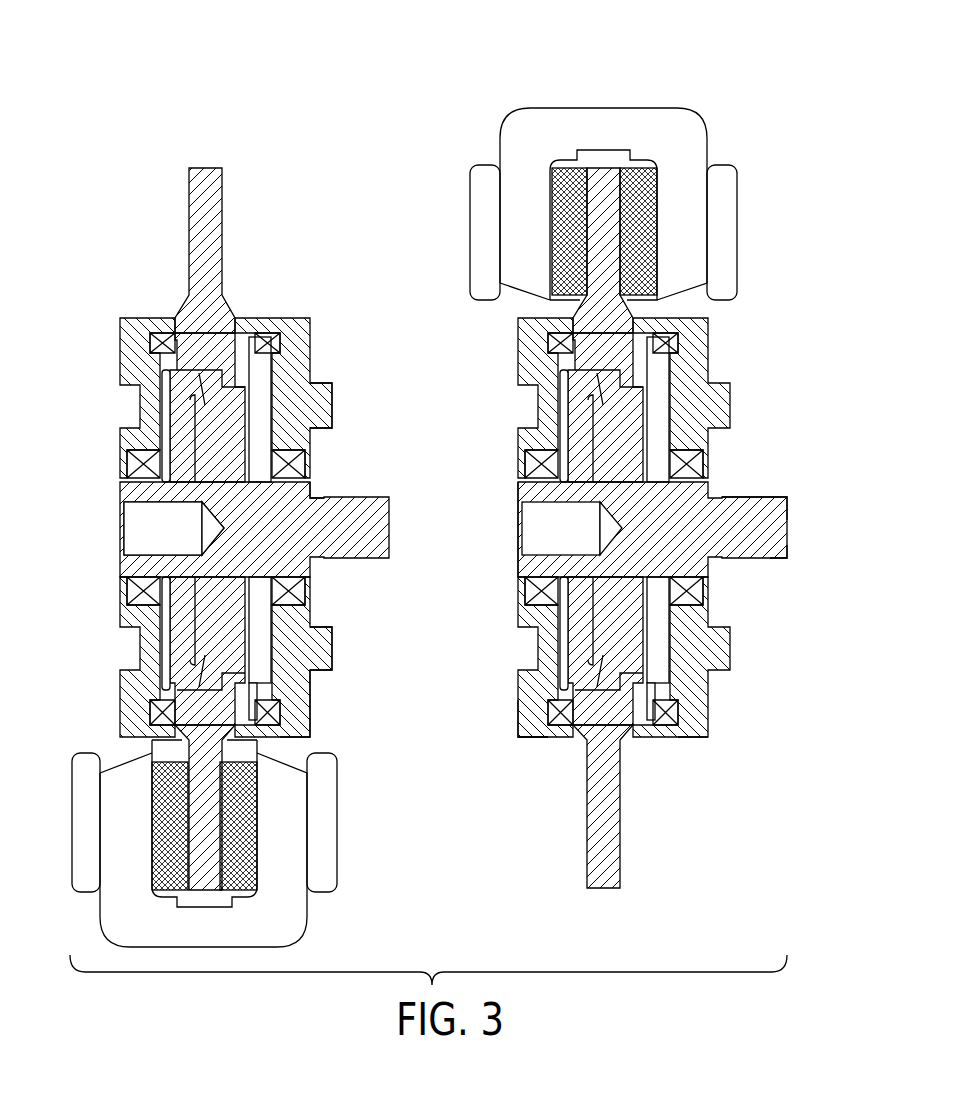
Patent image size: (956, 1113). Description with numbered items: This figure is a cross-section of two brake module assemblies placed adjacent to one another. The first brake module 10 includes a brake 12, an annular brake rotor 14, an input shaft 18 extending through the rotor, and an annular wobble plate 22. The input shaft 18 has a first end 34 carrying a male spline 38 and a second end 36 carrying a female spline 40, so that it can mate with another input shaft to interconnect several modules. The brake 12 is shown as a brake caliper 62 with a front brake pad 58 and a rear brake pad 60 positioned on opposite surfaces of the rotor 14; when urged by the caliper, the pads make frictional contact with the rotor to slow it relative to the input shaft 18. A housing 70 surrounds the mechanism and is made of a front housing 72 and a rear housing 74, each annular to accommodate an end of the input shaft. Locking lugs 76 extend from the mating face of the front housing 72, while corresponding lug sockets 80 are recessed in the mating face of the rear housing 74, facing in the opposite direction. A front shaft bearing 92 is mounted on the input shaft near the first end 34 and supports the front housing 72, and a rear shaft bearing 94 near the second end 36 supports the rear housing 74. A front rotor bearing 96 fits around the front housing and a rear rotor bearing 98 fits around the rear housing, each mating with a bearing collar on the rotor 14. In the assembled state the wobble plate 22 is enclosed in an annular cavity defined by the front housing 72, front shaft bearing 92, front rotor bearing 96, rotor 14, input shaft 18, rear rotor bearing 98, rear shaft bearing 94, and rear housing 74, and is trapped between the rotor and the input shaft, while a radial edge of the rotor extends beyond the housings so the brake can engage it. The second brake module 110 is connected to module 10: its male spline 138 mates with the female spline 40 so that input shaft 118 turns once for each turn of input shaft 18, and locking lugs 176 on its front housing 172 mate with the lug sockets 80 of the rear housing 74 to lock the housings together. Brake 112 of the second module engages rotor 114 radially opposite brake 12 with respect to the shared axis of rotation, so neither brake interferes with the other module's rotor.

The brake module 10 is at (745, 88).
The brake 12 is at (567, 108).
The annular brake rotor 14 is at (612, 865).
The input shaft 18 is at (775, 527).
The annular wobble plate 22 is at (630, 415).
The first end 34 is at (793, 494).
The second end 36 is at (497, 492).
The male spline 38 is at (768, 565).
The female spline 40 is at (552, 548).
The front brake pad 58 is at (655, 300).
The rear brake pad 60 is at (552, 300).
The brake caliper 62 is at (641, 125).
The housing 70 is at (520, 702).
The front housing 72 is at (700, 692).
The rear housing 74 is at (527, 728).
The locking lugs 76 is at (722, 412).
The lug sockets 80 is at (532, 410).
The front shaft bearing 92 is at (700, 470).
The rear shaft bearing 94 is at (537, 465).
The front rotor bearing 96 is at (672, 345).
The rear rotor bearing 98 is at (558, 345).
The second brake module 110 is at (128, 158).
The brake 112 is at (288, 910).
The rotor 114 is at (207, 178).
The input shaft 118 is at (380, 528).
The male spline 138 is at (318, 497).
The front housing 172 is at (300, 705).
The locking lugs 176 is at (325, 410).